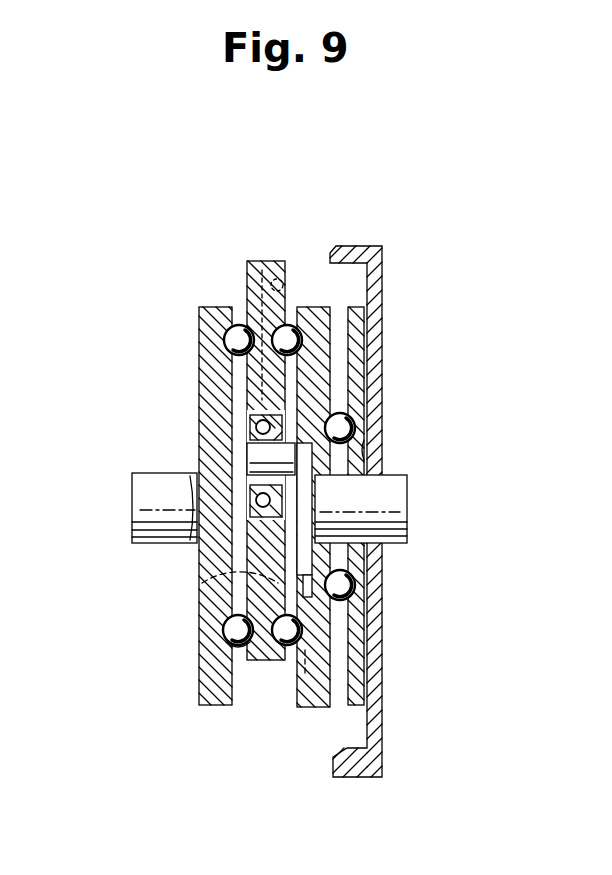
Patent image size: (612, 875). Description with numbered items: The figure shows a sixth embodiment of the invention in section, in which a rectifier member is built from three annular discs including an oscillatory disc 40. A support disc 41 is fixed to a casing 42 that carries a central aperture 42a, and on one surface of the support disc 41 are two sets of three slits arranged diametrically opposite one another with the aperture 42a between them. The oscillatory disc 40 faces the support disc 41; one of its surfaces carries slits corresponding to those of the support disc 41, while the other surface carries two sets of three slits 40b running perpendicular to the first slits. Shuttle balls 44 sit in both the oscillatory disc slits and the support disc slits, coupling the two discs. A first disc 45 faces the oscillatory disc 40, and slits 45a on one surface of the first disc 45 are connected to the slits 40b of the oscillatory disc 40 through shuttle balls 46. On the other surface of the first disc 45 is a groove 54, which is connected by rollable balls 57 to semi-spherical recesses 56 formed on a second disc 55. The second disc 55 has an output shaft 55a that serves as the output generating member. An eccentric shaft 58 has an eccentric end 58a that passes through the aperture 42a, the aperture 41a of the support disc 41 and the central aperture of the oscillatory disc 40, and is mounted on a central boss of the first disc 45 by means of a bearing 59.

The oscillatory disc 40 is at (313, 708).
The slits 40b is at (305, 677).
The support disc 41 is at (358, 688).
The aperture 41a is at (364, 450).
The casing 42 is at (378, 740).
The central aperture 42a is at (373, 432).
The shuttle balls 44 is at (357, 577).
The first disc 45 is at (263, 660).
The slits 45a is at (285, 322).
The shuttle balls 46 is at (289, 322).
The groove 54 is at (202, 588).
The second disc 55 is at (198, 393).
The output shaft 55a is at (142, 498).
The semi-spherical recesses 56 is at (237, 648).
The rollable balls 57 is at (224, 618).
The eccentric shaft 58 is at (392, 502).
The eccentric end 58a is at (260, 453).
The bearing 59 is at (262, 397).